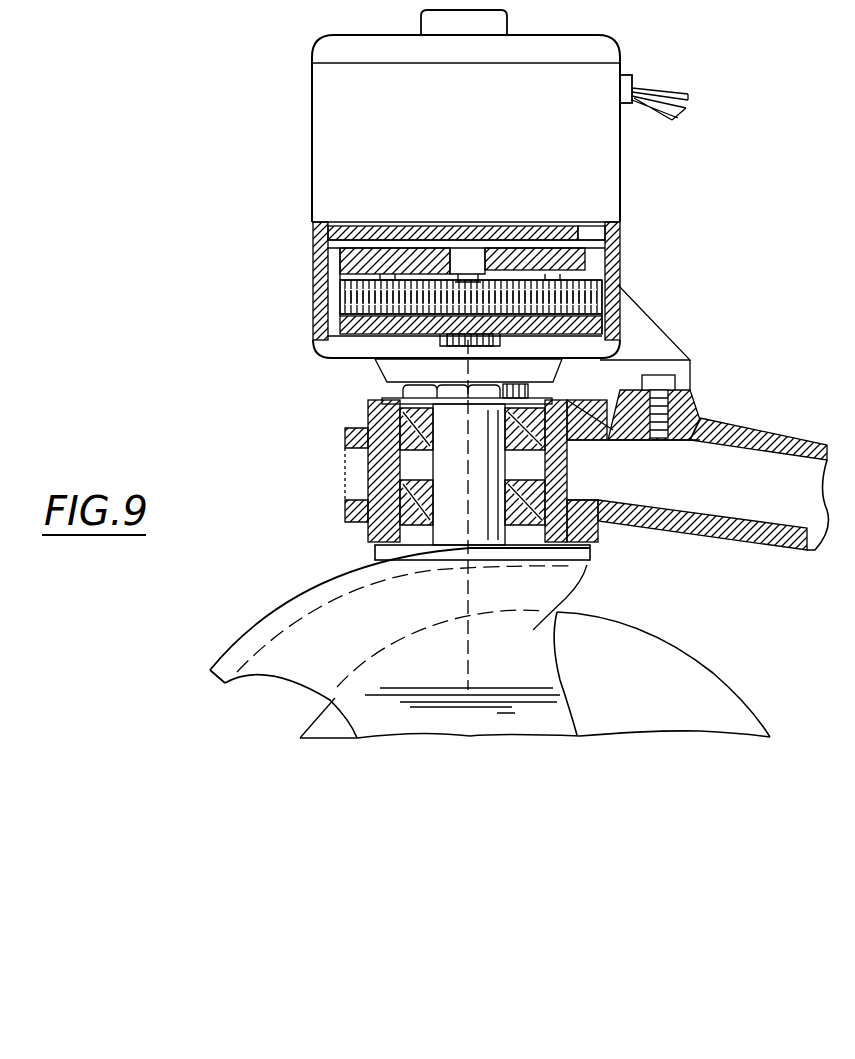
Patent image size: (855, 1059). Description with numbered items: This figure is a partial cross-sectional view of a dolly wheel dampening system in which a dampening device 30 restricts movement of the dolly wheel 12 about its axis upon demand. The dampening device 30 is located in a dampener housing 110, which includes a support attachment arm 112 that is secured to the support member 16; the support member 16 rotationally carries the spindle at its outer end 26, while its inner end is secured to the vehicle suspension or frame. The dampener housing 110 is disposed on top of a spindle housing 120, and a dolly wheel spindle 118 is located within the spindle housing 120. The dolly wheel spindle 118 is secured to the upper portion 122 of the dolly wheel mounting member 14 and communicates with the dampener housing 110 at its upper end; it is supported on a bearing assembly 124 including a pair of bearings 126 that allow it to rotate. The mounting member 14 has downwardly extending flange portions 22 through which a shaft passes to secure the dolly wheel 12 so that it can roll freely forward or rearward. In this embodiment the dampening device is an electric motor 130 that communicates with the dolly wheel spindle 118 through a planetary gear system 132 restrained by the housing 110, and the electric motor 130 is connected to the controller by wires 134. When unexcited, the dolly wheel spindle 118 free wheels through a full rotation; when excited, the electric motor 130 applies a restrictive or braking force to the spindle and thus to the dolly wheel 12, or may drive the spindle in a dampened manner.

The dampening device 30 is at (256, 80).
The electric motor 130 is at (352, 133).
The wires 134 is at (656, 92).
The dampener housing 110 is at (313, 258).
The planetary gear system 132 is at (585, 295).
The support attachment arm 112 is at (685, 360).
The support member 16 is at (790, 472).
The outer end 26 is at (602, 478).
The dolly wheel spindle 118 is at (445, 456).
The bearing assembly 124 is at (418, 471).
The bearings 126 is at (530, 475).
The spindle housing 120 is at (362, 490).
The upper portion 122 is at (323, 583).
The flange portions 22 is at (350, 704).
The dolly wheel mounting member 14 is at (533, 630).
The dolly wheel 12 is at (653, 653).